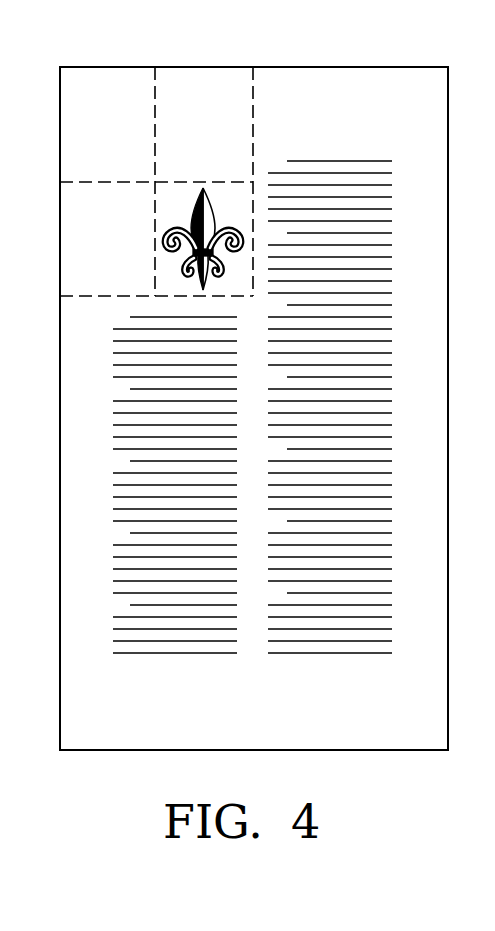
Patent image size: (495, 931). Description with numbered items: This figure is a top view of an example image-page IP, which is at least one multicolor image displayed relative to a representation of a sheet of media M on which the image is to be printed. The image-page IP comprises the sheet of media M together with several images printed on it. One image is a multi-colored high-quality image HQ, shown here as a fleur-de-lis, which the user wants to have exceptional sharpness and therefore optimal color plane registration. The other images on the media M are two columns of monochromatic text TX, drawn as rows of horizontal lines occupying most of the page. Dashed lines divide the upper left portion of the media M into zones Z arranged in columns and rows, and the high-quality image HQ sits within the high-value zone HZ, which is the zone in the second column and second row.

The image-page IP is at (421, 67).
The sheet of media M is at (204, 360).
The zone Z is at (200, 74).
The high-value zone HZ is at (162, 205).
The high-quality image HQ is at (208, 212).
The monochromatic text TX is at (220, 654).